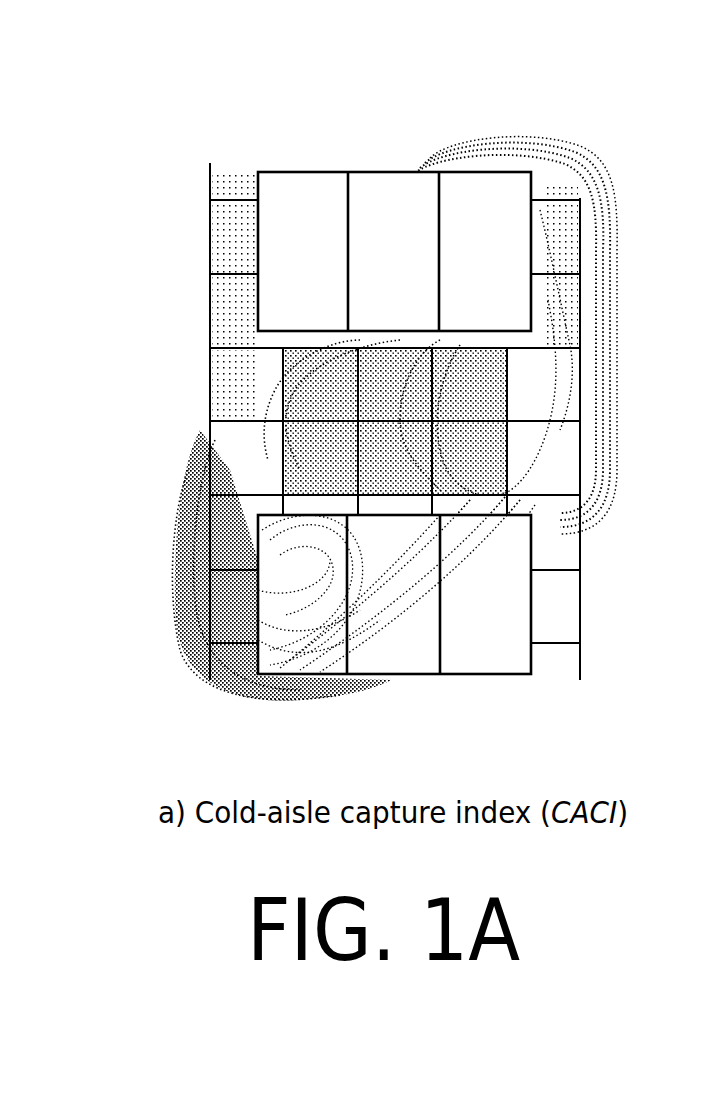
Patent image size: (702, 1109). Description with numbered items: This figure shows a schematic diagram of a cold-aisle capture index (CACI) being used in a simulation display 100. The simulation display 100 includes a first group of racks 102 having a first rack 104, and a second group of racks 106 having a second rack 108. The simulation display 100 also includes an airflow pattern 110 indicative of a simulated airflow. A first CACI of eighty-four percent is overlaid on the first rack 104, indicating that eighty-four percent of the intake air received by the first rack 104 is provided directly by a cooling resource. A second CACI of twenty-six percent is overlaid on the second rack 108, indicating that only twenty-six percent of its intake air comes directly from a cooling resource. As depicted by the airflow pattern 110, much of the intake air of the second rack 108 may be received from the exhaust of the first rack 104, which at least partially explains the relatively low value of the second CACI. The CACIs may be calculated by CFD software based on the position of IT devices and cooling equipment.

The simulation display 100 is at (403, 385).
The first group of racks 102 is at (196, 277).
The first rack 104 is at (400, 170).
The second group of racks 106 is at (196, 469).
The second rack 108 is at (348, 676).
The airflow pattern 110 is at (606, 305).